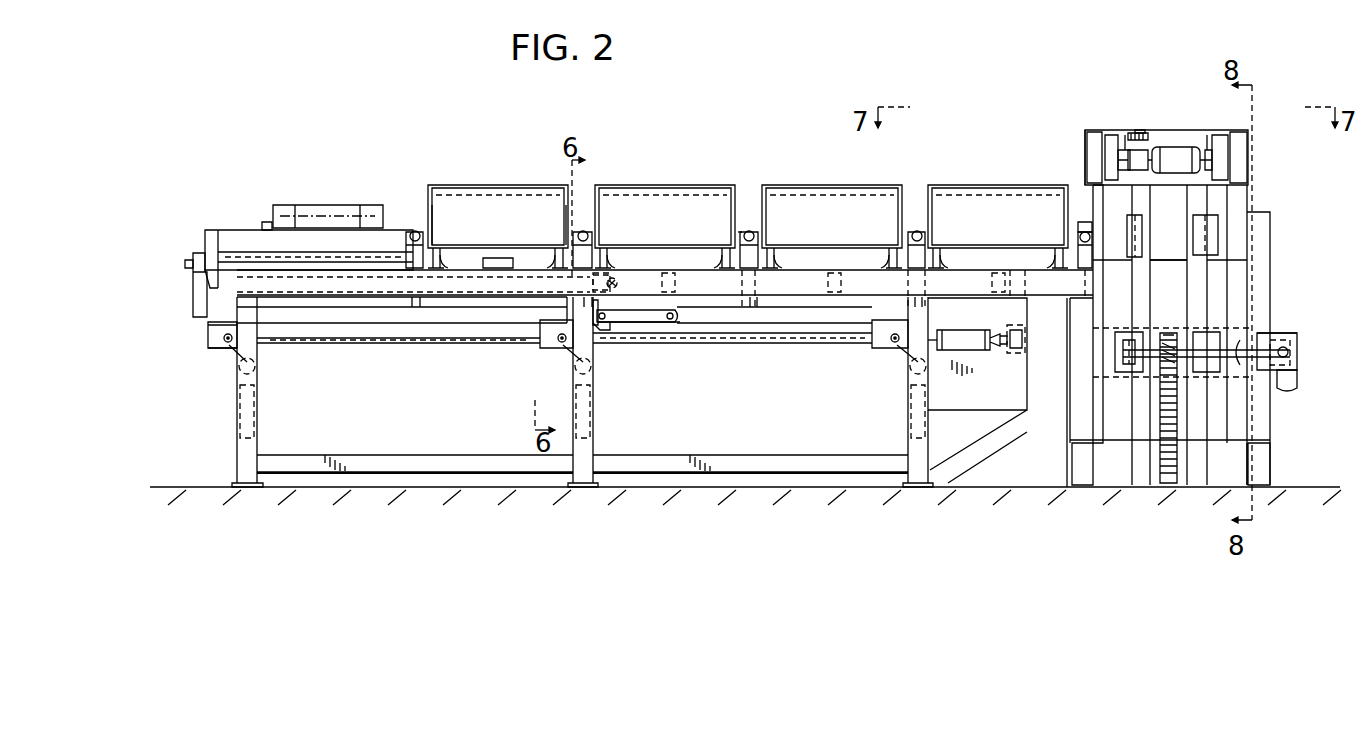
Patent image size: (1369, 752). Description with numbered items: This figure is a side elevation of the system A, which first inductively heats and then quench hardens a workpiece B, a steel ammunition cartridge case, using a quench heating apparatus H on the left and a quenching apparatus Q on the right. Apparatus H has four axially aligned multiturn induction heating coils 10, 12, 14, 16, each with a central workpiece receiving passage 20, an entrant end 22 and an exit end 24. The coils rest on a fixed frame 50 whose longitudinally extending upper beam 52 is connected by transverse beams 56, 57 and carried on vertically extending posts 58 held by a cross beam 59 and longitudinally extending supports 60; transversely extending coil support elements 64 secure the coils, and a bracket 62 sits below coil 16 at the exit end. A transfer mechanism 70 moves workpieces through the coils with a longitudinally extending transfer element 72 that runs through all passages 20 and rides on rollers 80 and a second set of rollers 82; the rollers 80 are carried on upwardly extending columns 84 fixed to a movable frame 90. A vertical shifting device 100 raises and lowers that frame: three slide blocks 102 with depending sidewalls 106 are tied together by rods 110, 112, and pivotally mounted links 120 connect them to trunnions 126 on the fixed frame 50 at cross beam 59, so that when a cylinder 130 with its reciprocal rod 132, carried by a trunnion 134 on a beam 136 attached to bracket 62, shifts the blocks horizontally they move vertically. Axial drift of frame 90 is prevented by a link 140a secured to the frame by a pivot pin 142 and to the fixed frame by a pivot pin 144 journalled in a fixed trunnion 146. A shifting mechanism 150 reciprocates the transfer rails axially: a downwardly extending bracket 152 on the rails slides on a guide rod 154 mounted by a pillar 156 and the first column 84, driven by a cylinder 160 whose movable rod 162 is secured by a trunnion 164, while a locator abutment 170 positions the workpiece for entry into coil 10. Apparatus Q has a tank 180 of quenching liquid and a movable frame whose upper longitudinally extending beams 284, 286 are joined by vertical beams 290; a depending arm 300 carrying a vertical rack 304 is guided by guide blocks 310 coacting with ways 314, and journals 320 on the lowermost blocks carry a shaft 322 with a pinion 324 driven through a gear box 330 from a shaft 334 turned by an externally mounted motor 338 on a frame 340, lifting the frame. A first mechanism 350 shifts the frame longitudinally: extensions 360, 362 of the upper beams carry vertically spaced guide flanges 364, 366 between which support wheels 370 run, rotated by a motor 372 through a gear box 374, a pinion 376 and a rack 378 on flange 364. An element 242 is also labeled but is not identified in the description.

The induction heating coil 10 is at (520, 186).
The induction heating coil 12 is at (680, 186).
The induction heating coil 14 is at (805, 186).
The induction heating coil 16 is at (967, 186).
The central workpiece receiving passage 20 is at (490, 195).
The entrant end 22 is at (432, 205).
The exit end 24 is at (576, 180).
The fixed frame 50 is at (605, 420).
The upper beam 52 is at (815, 307).
The transverse beam 56 is at (676, 283).
The transverse beam 57 is at (496, 258).
The post 58 is at (257, 446).
The cross beam 59 is at (257, 410).
The longitudinally extending support 60 is at (436, 455).
The bracket 62 is at (1030, 400).
The coil support element 64 is at (445, 260).
The transfer mechanism 70 is at (188, 357).
The transfer element 72 is at (745, 215).
The roller 80 is at (412, 232).
The roller 82 is at (1078, 222).
The column 84 is at (418, 297).
The movable frame 90 is at (735, 345).
The vertical shifting device 100 is at (862, 388).
The slide block 102 is at (215, 350).
The sidewall 106 is at (235, 342).
The rod 110 is at (403, 345).
The rod 112 is at (760, 345).
The link 120 is at (237, 352).
The trunnion 126 is at (257, 372).
The cylinder 130 is at (962, 340).
The reciprocal rod 132 is at (938, 345).
The trunnion 134 is at (1022, 339).
The beam 136 is at (1020, 365).
The link 140a is at (650, 326).
The pivot pin 142 is at (677, 316).
The pivot pin 144 is at (614, 285).
The fixed trunnion 146 is at (610, 325).
The shifting mechanism 150 is at (200, 283).
The bracket 152 is at (209, 232).
The guide rod 154 is at (297, 258).
The pillar 156 is at (195, 310).
The cylinder 160 is at (503, 298).
The movable rod 162 is at (350, 298).
The trunnion 164 is at (610, 276).
The locator abutment 170 is at (262, 224).
The tank 180 is at (1250, 422).
The shaft 242 is at (1208, 135).
The upper beam 284 is at (1247, 160).
The upper beam 286 is at (1095, 130).
The vertical beam 290 is at (1090, 200).
The depending arm 300 is at (1182, 312).
The rack 304 is at (1172, 480).
The guide block 310 is at (1220, 235).
The way 314 is at (1175, 280).
The journal 320 is at (1133, 372).
The shaft 322 is at (1245, 375).
The pinion 324 is at (1163, 365).
The gear box 330 is at (1282, 330).
The shaft 334 is at (1300, 356).
The motor 338 is at (1297, 383).
The frame 340 is at (1268, 305).
The first mechanism 350 is at (1150, 120).
The extension 360 is at (1250, 140).
The extension 362 is at (1085, 135).
The guide flange 364 is at (1110, 135).
The guide flange 366 is at (1220, 185).
The support wheel 370 is at (1087, 152).
The motor 372 is at (1172, 148).
The gear box 374 is at (1142, 168).
The pinion 376 is at (1140, 135).
The rack 378 is at (1128, 135).
The system A is at (913, 65).
The workpiece B is at (327, 205).
The quench heating apparatus H is at (743, 148).
The quenching apparatus Q is at (1292, 250).